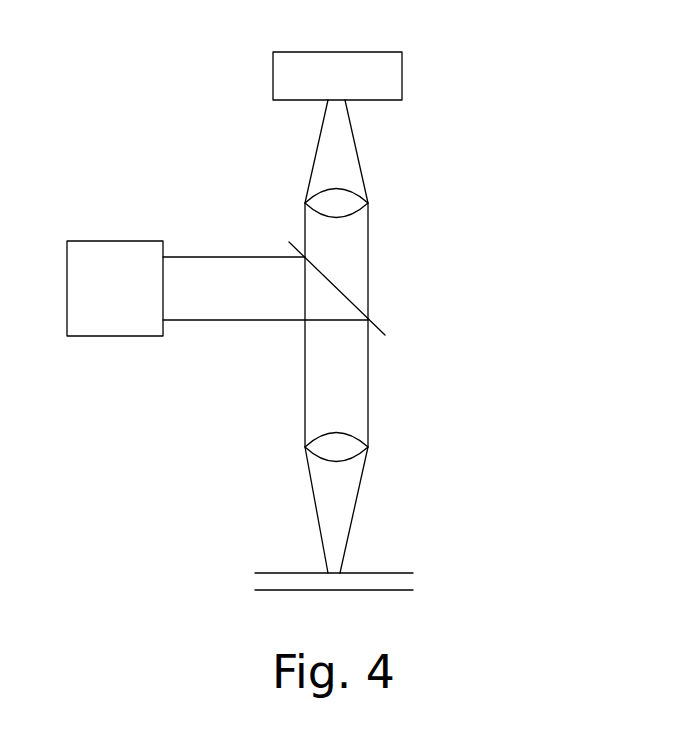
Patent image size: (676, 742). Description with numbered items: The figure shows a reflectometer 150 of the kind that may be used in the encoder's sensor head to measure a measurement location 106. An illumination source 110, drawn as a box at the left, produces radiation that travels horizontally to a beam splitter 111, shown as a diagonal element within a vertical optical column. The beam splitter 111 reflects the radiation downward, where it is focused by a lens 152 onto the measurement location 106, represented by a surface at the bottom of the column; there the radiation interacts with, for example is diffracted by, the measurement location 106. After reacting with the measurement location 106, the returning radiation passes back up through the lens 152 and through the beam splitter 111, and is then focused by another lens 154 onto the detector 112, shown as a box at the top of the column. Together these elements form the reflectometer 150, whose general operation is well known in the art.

The reflectometer 150 is at (203, 105).
The detector 112 is at (402, 83).
The lens 154 is at (305, 202).
The illumination source 110 is at (148, 241).
The beam splitter 111 is at (385, 335).
The lens 152 is at (305, 447).
The measurement location 106 is at (280, 536).